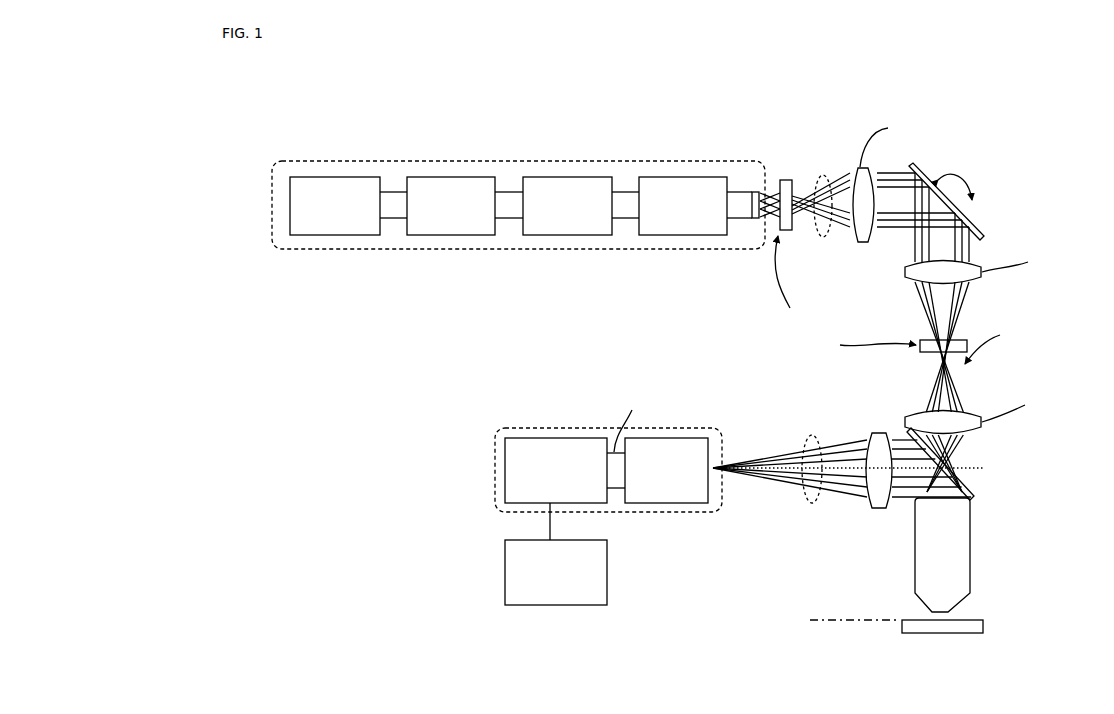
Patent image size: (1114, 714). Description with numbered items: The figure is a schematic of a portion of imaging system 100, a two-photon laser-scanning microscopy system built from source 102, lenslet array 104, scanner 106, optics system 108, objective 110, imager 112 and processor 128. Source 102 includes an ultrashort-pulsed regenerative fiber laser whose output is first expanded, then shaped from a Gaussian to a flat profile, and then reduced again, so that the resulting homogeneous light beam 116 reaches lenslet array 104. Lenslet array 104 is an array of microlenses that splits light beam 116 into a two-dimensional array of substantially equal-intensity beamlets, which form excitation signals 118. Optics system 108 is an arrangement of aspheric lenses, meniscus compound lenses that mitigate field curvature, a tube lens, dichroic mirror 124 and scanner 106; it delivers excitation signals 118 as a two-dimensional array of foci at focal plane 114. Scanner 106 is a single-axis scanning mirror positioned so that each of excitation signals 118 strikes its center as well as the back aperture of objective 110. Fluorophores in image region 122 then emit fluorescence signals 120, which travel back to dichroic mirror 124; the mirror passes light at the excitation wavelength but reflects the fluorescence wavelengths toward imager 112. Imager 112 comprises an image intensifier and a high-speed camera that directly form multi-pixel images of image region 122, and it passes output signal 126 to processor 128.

The imaging system 100 is at (285, 92).
The source 102 is at (505, 158).
The lenslet array 104 is at (757, 222).
The scanner 106 is at (982, 230).
The optics system 108 is at (846, 106).
The objective 110 is at (963, 568).
The imager 112 is at (493, 470).
The focal plane 114 is at (793, 622).
The light beam 116 is at (802, 154).
The excitation signals 118 is at (820, 175).
The fluorescence signals 120 is at (810, 505).
The image region 122 is at (938, 633).
The dichroic mirror 124 is at (974, 490).
The output signal 126 is at (548, 522).
The processor 128 is at (505, 567).